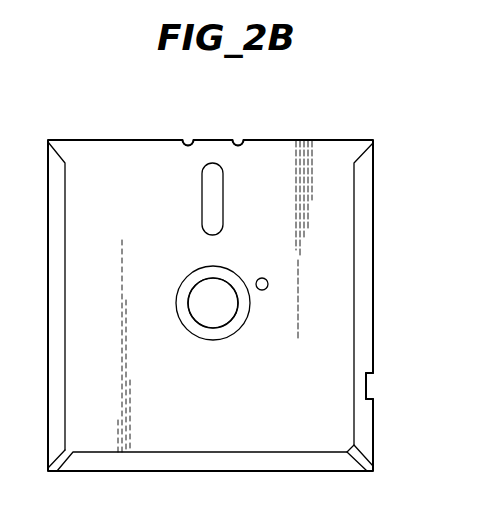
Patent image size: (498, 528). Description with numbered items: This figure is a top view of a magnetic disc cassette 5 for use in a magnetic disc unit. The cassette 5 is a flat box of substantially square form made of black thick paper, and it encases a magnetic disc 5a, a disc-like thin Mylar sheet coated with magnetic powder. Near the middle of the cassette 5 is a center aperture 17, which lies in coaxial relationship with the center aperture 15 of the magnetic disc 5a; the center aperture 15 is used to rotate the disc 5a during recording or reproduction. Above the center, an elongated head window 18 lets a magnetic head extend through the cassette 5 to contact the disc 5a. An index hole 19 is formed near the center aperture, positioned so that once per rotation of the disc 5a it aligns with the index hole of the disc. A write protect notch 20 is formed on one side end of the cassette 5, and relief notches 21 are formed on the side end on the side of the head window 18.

The magnetic disc cassette 5 is at (215, 432).
The magnetic disc 5a is at (240, 307).
The center aperture 15 is at (223, 318).
The center aperture 17 is at (236, 277).
The head window 18 is at (205, 222).
The index hole 19 is at (268, 284).
The write protect notch 20 is at (368, 385).
The relief notches 21 is at (239, 140).